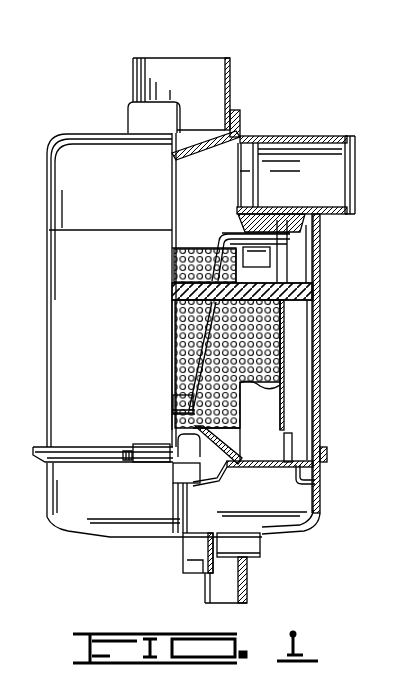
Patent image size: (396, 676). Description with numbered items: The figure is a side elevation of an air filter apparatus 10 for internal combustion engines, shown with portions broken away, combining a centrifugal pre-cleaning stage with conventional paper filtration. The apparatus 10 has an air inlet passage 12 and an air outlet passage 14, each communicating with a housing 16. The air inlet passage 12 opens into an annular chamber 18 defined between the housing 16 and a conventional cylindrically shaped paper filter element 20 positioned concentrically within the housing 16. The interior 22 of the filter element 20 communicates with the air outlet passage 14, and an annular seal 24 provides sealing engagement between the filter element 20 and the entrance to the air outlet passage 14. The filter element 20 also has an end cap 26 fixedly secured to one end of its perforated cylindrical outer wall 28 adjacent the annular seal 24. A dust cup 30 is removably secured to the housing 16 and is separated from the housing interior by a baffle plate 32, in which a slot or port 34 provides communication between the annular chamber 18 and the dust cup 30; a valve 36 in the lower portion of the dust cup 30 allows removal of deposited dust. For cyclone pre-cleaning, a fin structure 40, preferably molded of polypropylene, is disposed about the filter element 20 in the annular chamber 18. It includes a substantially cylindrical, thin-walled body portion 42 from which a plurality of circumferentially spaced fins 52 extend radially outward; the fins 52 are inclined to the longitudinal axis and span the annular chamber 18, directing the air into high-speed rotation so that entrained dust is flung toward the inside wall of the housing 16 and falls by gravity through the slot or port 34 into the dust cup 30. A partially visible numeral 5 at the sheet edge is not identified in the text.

The apparatus 10 is at (258, 103).
The air inlet passage 12 is at (216, 75).
The air outlet passage 14 is at (327, 160).
The housing 16 is at (320, 343).
The annular chamber 18 is at (298, 324).
The filter element 20 is at (253, 407).
The interior of the filter element 22 is at (250, 420).
The annular seal 24 is at (300, 213).
The end cap 26 is at (258, 257).
The perforated cylindrical outer wall 28 is at (277, 313).
The dust cup 30 is at (312, 515).
The baffle plate 32 is at (305, 485).
The slot or port 34 is at (318, 472).
The valve 36 is at (248, 580).
The fin structure 40 is at (172, 322).
The cylindrical body portion 42 is at (215, 250).
The fins 52 is at (230, 292).
The partial numeral 5 is at (354, 292).